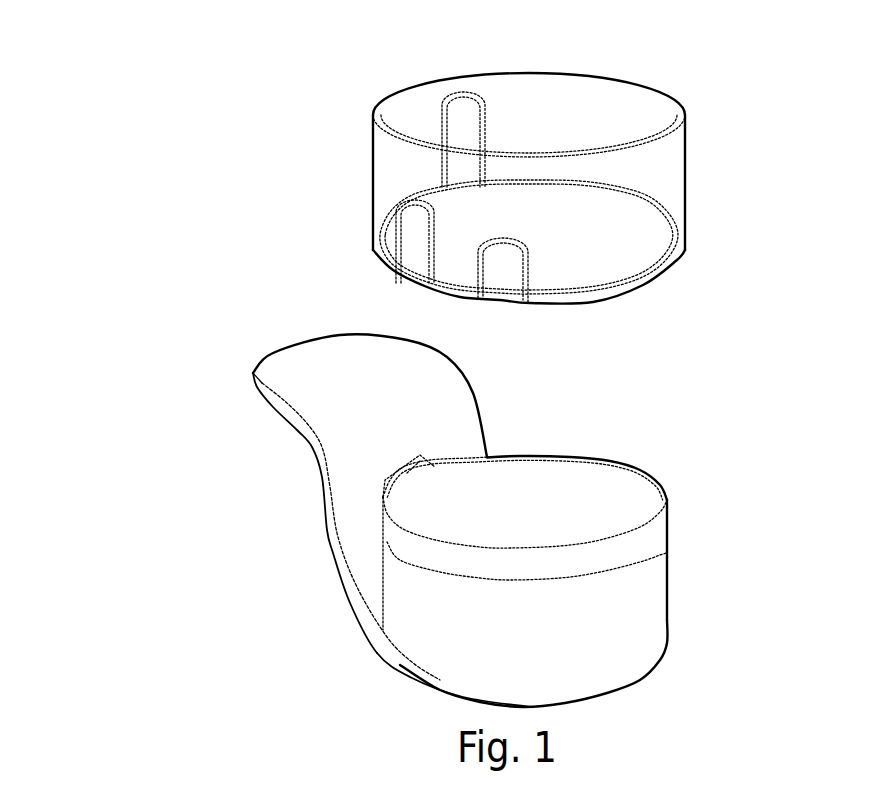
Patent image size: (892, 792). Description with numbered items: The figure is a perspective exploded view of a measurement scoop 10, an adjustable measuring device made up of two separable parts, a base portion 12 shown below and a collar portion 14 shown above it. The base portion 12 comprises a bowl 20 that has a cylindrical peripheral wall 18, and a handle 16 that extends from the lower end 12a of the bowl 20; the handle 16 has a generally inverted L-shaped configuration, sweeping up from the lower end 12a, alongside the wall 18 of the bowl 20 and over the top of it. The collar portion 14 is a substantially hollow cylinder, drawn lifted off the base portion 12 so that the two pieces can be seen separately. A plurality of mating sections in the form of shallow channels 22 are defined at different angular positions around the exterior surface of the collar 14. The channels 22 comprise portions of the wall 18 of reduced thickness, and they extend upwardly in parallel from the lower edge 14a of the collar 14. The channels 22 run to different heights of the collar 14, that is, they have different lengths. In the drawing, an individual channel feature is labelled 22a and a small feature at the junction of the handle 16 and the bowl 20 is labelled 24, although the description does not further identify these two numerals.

The clip assembly 10 is at (141, 263).
The spring clip 12 is at (350, 540).
The lower end of clip 12a is at (380, 666).
The cap 14 is at (380, 185).
The lower edge of cap 14a is at (655, 315).
The upper portion of clip 16 is at (282, 402).
The base 18 is at (622, 597).
The top surface of base 20 is at (524, 520).
The tabs 22 is at (460, 162).
The tab 22a is at (460, 127).
The clip tab 24 is at (412, 463).